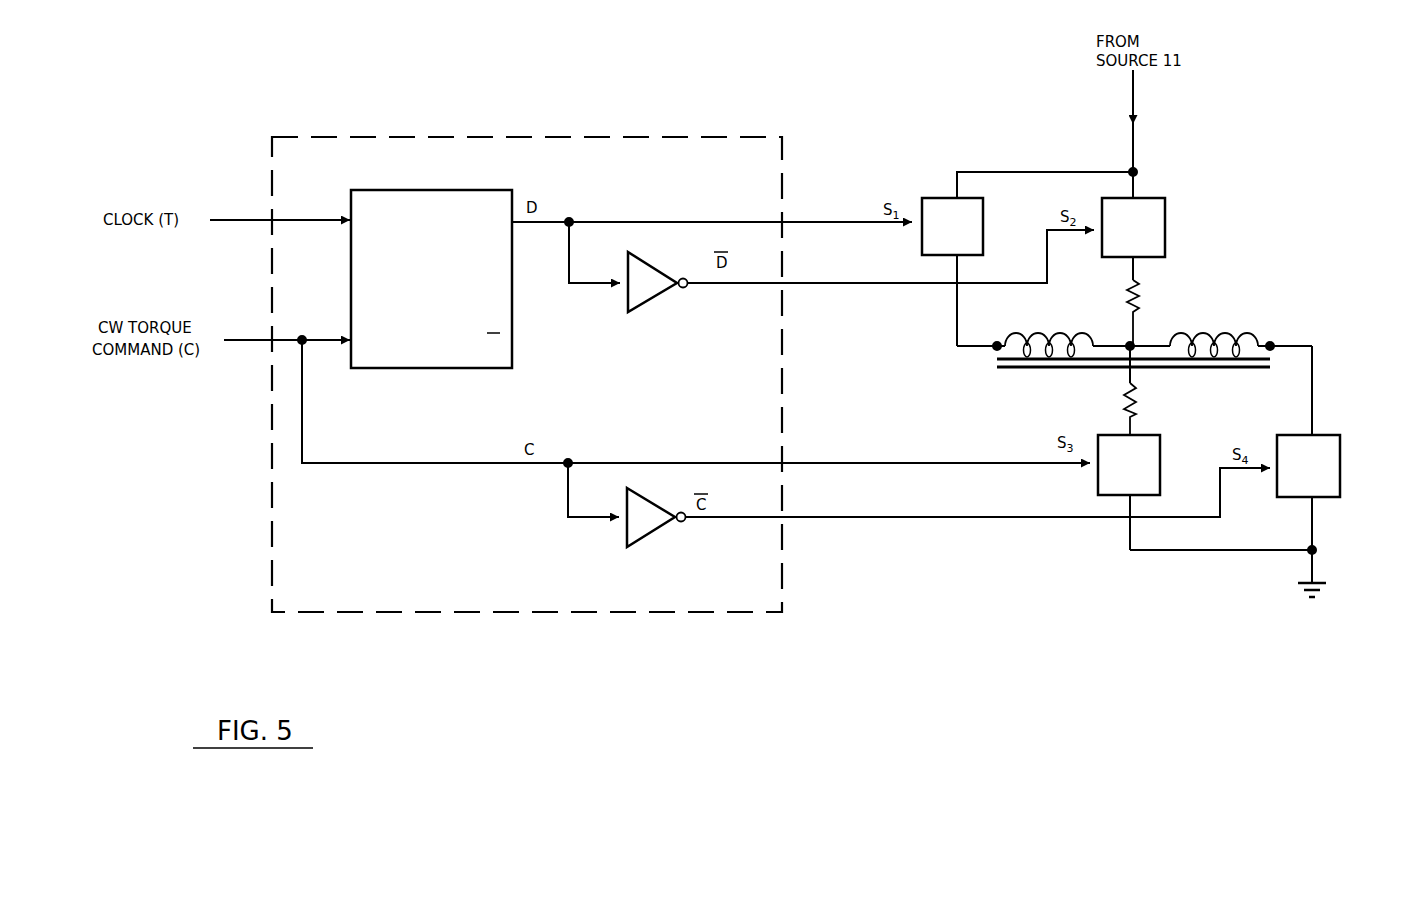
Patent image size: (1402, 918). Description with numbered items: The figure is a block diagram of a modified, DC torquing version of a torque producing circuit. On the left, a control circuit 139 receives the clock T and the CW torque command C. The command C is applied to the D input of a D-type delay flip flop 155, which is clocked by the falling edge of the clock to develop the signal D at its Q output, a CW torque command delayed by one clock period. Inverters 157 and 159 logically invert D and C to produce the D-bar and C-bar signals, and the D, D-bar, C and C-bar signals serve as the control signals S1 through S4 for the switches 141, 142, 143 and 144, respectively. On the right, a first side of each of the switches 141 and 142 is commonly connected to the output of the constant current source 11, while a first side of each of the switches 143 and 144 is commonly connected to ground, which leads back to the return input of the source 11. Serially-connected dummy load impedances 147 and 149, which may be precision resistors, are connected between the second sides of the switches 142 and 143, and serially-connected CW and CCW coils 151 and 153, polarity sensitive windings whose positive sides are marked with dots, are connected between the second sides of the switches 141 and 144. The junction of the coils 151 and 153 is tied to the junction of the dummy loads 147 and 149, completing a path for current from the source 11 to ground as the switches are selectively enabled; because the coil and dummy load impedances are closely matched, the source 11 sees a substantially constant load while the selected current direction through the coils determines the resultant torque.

The constant current source 11 is at (1047, 134).
The control circuit 139 is at (482, 132).
The switch 141 is at (963, 210).
The switch 142 is at (1155, 229).
The switch 143 is at (1148, 458).
The switch 144 is at (1325, 449).
The dummy load impedance 147 is at (1138, 300).
The dummy load impedance 149 is at (1136, 404).
The CW coil 151 is at (1098, 340).
The CCW coil 153 is at (1221, 337).
The delay flip flop 155 is at (448, 230).
The inverter 157 is at (640, 278).
The inverter 159 is at (638, 512).